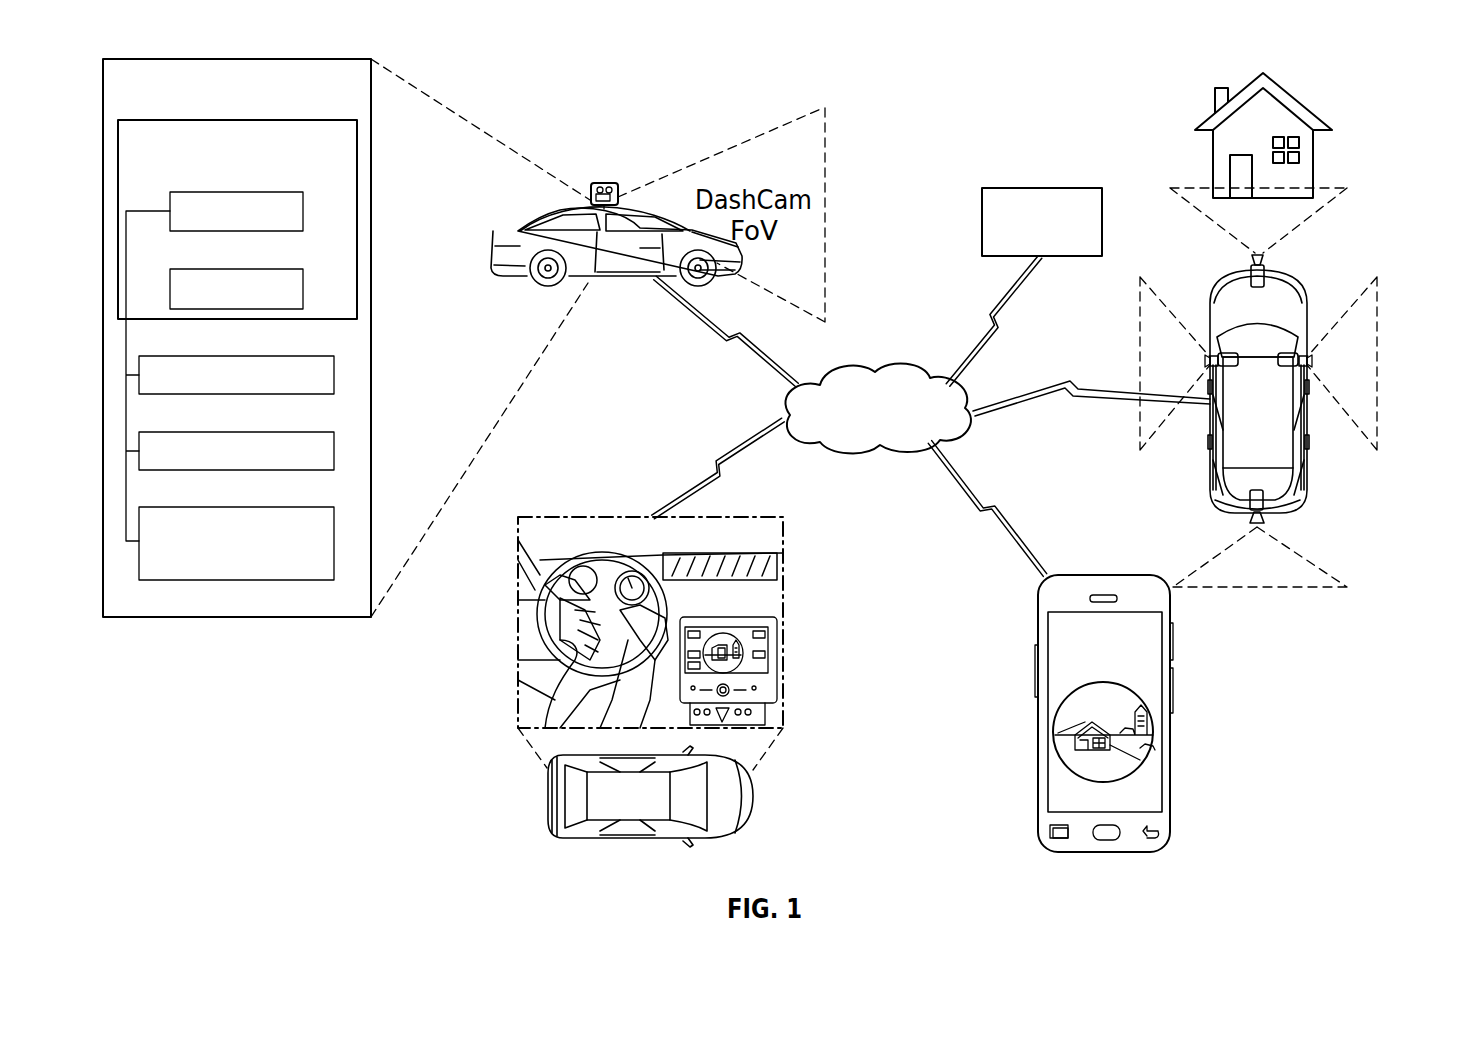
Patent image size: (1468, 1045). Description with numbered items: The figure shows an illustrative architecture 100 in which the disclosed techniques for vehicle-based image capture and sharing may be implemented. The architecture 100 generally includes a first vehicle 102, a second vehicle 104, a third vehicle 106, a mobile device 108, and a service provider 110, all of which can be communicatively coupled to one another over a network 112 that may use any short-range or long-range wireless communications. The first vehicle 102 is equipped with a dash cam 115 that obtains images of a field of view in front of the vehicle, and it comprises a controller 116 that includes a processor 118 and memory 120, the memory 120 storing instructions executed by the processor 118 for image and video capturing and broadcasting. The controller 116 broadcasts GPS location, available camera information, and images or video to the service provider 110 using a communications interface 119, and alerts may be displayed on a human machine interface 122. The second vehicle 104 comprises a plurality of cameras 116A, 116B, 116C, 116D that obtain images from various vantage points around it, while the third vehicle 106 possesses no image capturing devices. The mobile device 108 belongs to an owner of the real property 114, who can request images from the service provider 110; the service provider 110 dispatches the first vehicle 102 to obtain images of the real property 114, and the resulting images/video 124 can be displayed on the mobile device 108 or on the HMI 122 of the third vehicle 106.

The architecture 100 is at (1123, 85).
The first vehicle 102 is at (170, 58).
The second vehicle 104 is at (1352, 330).
The third vehicle 106 is at (649, 810).
The mobile device 108 is at (1165, 750).
The service provider 110 is at (1057, 188).
The network 112 is at (782, 405).
The real property 114 is at (1290, 122).
The dash cam 115 is at (205, 356).
The controller 116 is at (182, 120).
The camera 116A is at (1268, 272).
The camera 116B is at (1312, 362).
The camera 116C is at (1265, 503).
The camera 116D is at (1205, 355).
The processor 118 is at (235, 192).
The communications interface 119 is at (205, 507).
The memory 120 is at (235, 269).
The human machine interface 122 is at (205, 432).
The images/video 124 is at (733, 643).